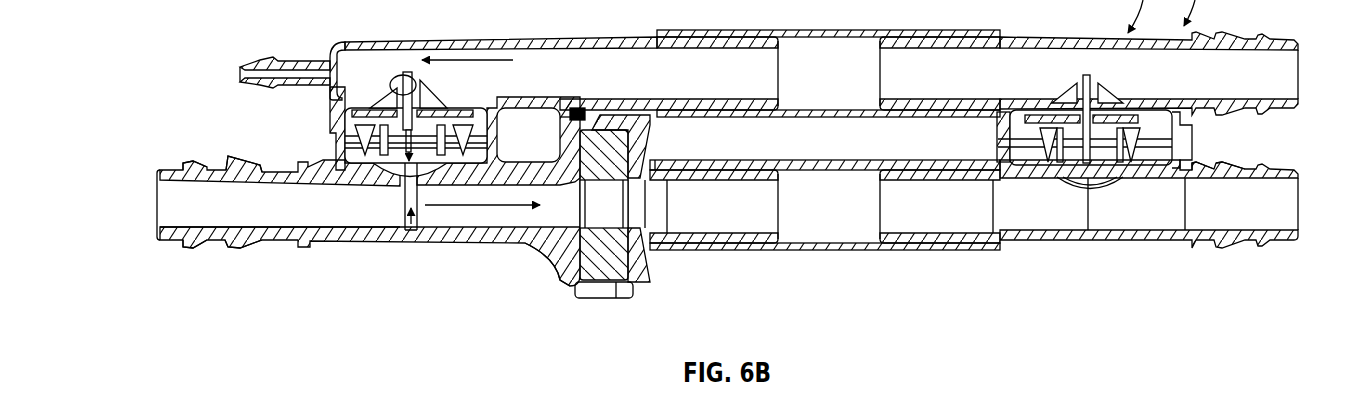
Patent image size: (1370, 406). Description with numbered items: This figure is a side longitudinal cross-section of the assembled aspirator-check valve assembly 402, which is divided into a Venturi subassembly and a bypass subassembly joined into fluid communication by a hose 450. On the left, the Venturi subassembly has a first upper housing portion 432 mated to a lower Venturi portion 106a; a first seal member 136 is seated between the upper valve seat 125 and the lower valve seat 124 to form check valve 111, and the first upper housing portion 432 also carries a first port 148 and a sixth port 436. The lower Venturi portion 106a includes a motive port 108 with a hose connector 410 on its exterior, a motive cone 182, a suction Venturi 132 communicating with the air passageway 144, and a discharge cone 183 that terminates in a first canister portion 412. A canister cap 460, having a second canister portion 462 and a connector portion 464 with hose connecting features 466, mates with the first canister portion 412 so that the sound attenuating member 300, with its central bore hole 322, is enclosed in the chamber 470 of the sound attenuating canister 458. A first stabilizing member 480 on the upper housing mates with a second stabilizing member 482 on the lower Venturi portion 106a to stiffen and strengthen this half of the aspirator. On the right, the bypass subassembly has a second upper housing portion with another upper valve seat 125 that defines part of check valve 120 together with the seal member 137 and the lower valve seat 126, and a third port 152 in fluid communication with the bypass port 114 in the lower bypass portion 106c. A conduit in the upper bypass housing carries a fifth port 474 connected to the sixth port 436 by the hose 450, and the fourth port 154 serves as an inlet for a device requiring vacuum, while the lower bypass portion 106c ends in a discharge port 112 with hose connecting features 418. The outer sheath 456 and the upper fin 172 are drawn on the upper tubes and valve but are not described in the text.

The motive port 108 is at (157, 216).
The lower Venturi portion 106a is at (406, 256).
The motive cone 182 is at (208, 226).
The hose connector 410 is at (230, 157).
The air passageway 144 is at (268, 218).
The discharge cone 183 is at (463, 216).
The suction Venturi 132 is at (412, 232).
The lower valve seat 124 is at (338, 167).
The second stabilizing member 482 is at (571, 133).
The first stabilizing member 480 is at (563, 106).
The enclosed chamber 470 is at (575, 262).
The first upper housing portion 432 is at (326, 48).
The check valve 111 is at (323, 130).
The first port 148 is at (247, 68).
The first seal member 136 is at (445, 106).
The sound attenuating member 300 is at (648, 252).
The bore hole 322 is at (652, 250).
The sound attenuating canister 458 is at (643, 292).
The first canister portion 412 is at (601, 285).
The second canister portion 462 is at (616, 292).
The hose connecting features 466 is at (733, 162).
The connector portion 464 is at (690, 162).
The canister cap 460 is at (707, 240).
The hose 450 is at (836, 236).
The upper outer sheath 456 is at (830, 30).
The sixth port 436 is at (770, 80).
The fifth port 474 is at (887, 80).
The aspirator-check valve assembly 402 is at (882, 26).
The fourth port 154 is at (1298, 80).
The upper valve seat 125 is at (1008, 125).
The check valve 120 is at (1180, 147).
The seal member 137 is at (1063, 107).
The third port 152 is at (1087, 84).
The valve fin 172 is at (1018, 38).
The bypass port 114 is at (1090, 175).
The discharge port 112 is at (1290, 210).
The lower bypass portion 106c is at (1087, 254).
The hose connecting features 418 is at (1250, 168).
The lower valve seat 126 is at (1165, 172).